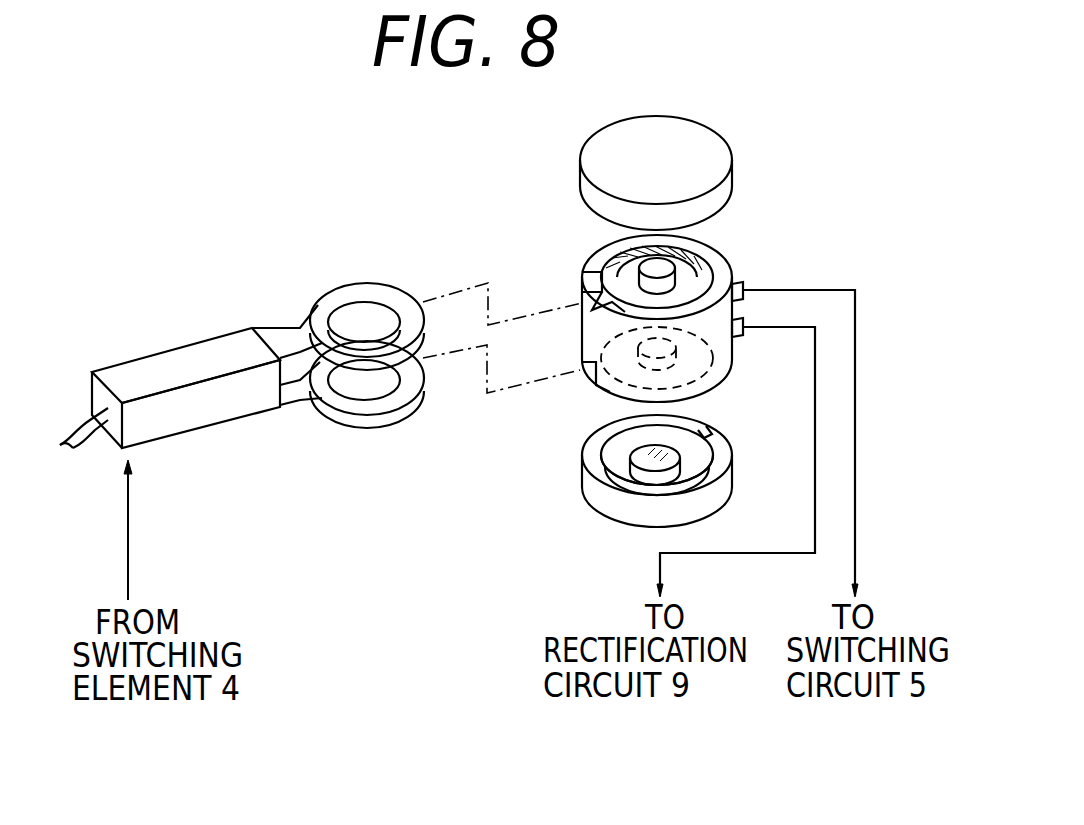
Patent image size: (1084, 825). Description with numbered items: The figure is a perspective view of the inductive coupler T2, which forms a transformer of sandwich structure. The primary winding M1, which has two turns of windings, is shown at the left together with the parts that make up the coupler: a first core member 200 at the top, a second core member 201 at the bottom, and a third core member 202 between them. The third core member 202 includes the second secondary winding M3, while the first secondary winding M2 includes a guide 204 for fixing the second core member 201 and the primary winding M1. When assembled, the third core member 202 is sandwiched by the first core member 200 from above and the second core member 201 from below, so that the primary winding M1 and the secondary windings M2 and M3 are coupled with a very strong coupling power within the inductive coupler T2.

The inductive coupler T2 is at (498, 208).
The first core member 200 is at (700, 157).
The second core member 201 is at (690, 512).
The third core member 202 is at (582, 328).
The guide 204 is at (582, 283).
The primary winding M1 is at (338, 332).
The first secondary winding M2 is at (740, 287).
The second secondary winding M3 is at (740, 338).